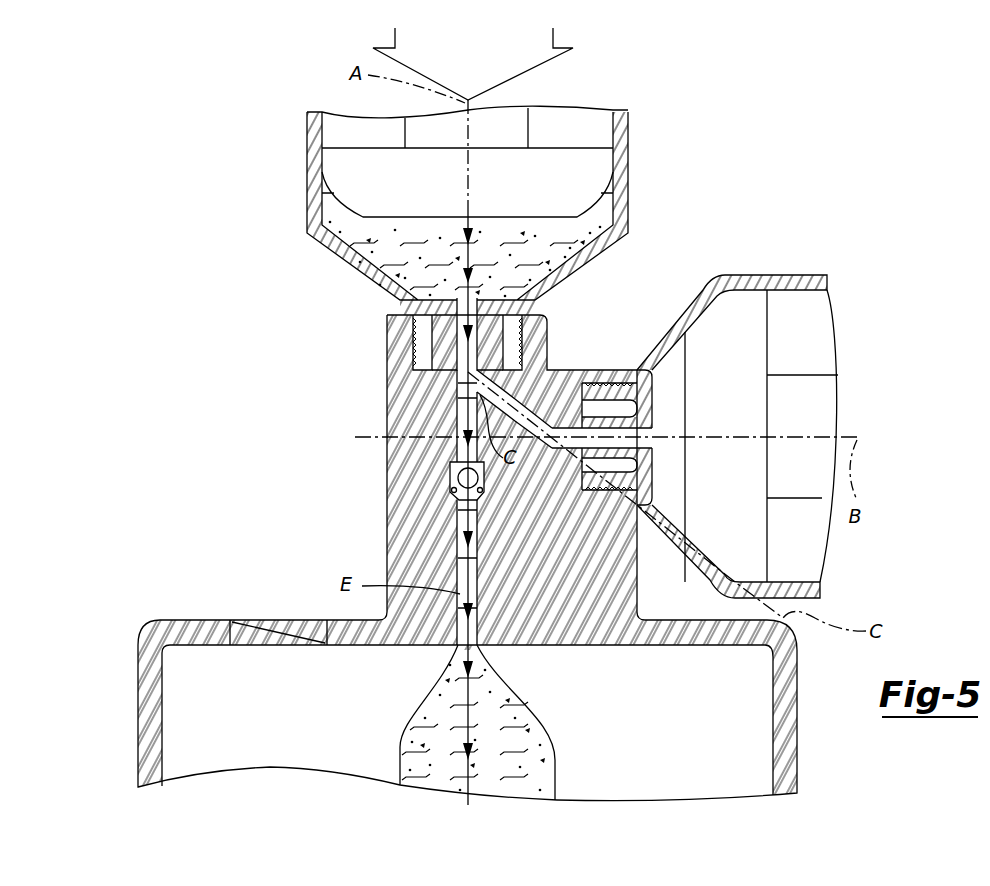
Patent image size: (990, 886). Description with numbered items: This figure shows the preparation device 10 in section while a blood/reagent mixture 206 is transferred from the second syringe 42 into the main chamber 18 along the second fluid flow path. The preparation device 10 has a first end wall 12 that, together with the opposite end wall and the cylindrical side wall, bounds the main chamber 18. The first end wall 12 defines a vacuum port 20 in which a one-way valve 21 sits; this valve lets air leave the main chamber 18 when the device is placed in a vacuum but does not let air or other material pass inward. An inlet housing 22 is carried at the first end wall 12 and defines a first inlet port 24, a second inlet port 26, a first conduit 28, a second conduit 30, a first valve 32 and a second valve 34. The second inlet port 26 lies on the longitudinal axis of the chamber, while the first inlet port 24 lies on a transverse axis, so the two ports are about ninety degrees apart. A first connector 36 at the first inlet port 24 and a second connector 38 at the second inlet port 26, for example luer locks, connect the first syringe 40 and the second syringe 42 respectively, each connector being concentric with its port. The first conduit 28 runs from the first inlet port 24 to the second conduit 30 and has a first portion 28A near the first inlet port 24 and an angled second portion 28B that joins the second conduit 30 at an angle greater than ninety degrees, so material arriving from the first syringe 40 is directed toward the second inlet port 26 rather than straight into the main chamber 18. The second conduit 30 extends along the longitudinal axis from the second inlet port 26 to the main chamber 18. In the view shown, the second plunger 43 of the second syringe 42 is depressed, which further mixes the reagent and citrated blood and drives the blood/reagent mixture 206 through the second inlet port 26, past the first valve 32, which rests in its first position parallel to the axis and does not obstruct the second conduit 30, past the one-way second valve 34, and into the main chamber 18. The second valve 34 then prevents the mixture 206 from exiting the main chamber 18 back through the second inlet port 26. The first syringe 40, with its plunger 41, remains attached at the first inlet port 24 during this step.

The preparation device 10 is at (118, 709).
The first end wall 12 is at (195, 622).
The main chamber 18 is at (760, 733).
The vacuum port 20 is at (240, 643).
The one-way valve 21 is at (283, 622).
The inlet housing 22 is at (386, 545).
The first inlet port 24 is at (610, 420).
The second inlet port 26 is at (447, 342).
The first conduit 28 is at (522, 326).
The first portion 28A is at (561, 428).
The second portion 28B is at (542, 404).
The second conduit 30 is at (457, 447).
The first valve 32 is at (462, 384).
The second valve 34 is at (456, 481).
The first connector 36 is at (630, 383).
The second connector 38 is at (411, 323).
The first syringe 40 is at (778, 276).
The plunger 41 is at (740, 338).
The second syringe 42 is at (628, 150).
The second plunger 43 is at (590, 160).
The blood/reagent mixture 206 is at (445, 236).